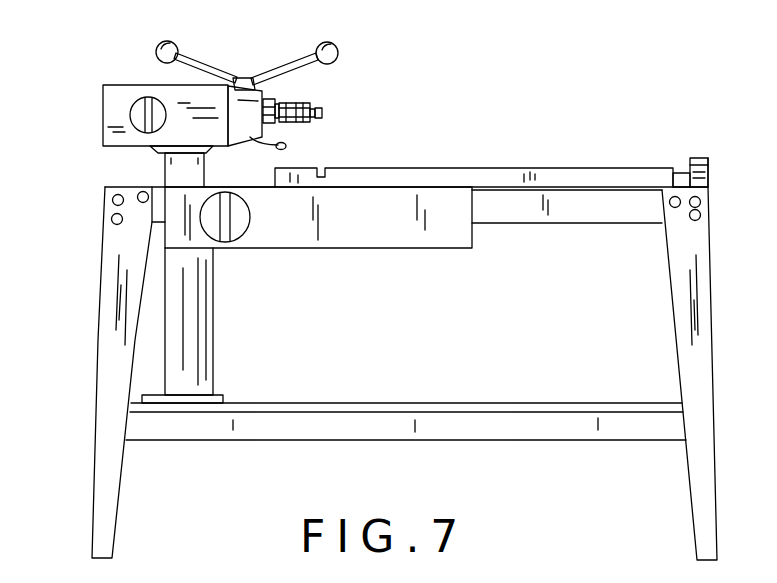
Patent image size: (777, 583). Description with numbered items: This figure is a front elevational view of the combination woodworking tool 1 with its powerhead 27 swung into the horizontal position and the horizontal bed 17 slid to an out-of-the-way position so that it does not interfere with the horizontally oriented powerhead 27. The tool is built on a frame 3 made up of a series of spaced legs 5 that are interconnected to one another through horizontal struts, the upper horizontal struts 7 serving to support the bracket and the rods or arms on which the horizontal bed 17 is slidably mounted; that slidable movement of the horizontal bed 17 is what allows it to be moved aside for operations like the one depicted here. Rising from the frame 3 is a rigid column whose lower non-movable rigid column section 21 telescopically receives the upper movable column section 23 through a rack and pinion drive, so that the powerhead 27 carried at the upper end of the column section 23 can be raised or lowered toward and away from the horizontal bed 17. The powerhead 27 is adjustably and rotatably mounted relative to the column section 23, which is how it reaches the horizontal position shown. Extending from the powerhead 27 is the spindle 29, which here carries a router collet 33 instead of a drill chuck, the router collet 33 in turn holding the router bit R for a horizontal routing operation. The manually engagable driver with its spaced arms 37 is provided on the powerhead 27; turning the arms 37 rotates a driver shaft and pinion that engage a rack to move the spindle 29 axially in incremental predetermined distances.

The combination woodworking tool 1 is at (503, 86).
The frame 3 is at (92, 376).
The legs 5 is at (108, 475).
The upper horizontal struts 7 is at (528, 212).
The horizontal bed 17 is at (500, 180).
The lower non-movable rigid column section 21 is at (198, 337).
The upper movable column section 23 is at (188, 172).
The powerhead 27 is at (130, 77).
The spindle 29 is at (276, 100).
The router collet 33 is at (298, 123).
The spaced arms 37 is at (195, 58).
The router bit R is at (323, 112).